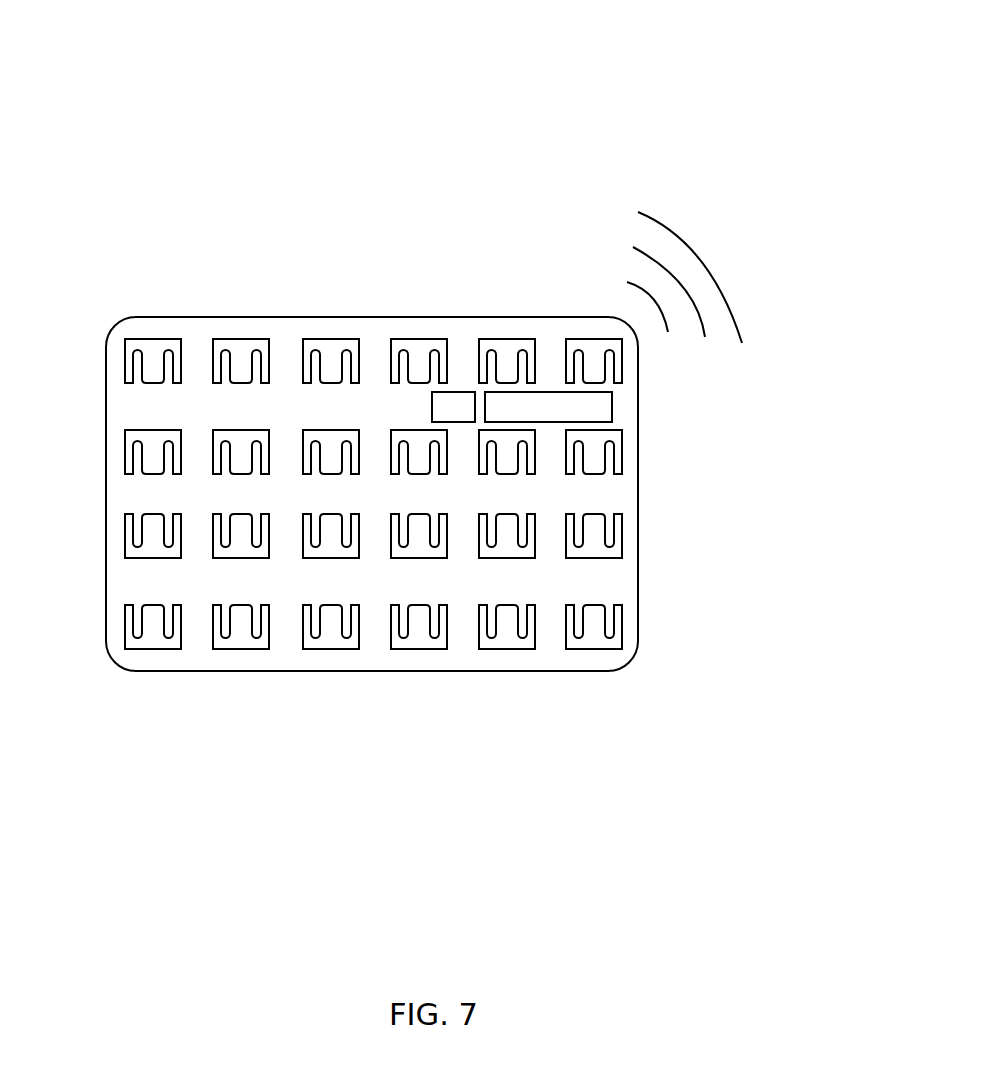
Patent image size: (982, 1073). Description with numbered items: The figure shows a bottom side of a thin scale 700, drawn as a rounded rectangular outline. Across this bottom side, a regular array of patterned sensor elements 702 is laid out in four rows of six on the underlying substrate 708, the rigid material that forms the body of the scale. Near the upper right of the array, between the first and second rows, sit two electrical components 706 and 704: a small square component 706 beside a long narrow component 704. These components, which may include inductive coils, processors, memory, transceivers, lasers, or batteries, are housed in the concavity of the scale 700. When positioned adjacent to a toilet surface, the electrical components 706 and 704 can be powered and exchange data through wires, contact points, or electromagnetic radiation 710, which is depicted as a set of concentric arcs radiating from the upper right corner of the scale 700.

The scale 700 is at (180, 95).
The antenna element / transducer cell 702 is at (242, 352).
The electrical component 704 is at (607, 406).
The electrical component 706 is at (459, 393).
The substrate 708 is at (376, 335).
The electromagnetic radiation 710 is at (647, 212).